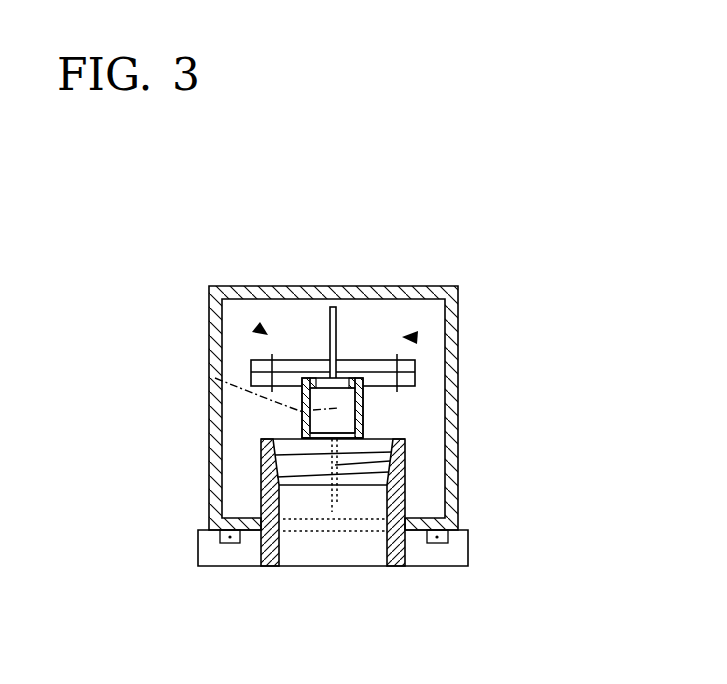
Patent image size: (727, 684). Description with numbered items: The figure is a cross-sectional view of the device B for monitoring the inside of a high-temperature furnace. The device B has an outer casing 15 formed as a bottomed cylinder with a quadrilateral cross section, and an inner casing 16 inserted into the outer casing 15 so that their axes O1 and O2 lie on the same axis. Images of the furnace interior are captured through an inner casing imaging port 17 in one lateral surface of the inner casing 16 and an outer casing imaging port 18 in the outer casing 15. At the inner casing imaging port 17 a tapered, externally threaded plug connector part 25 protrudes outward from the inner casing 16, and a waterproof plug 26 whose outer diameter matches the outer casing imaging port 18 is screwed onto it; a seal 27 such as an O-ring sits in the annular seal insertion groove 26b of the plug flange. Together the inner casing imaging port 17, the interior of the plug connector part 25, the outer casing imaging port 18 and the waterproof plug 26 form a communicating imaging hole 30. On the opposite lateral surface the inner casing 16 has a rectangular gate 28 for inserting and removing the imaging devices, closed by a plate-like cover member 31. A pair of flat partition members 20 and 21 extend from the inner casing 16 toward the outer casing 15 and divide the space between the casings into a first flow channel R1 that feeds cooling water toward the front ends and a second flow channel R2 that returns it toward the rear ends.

The device for monitoring the inside of the high-temperature furnace B is at (594, 157).
The outer casing 15 is at (463, 296).
The inner casing 16 is at (301, 337).
The inner casing imaging port 17 is at (302, 436).
The outer casing imaging port 18 is at (285, 527).
The partition member 20 is at (337, 503).
The partition member 21 is at (329, 311).
The plug connector part 25 is at (405, 455).
The waterproof plug 26 is at (345, 597).
The seal insertion groove 26b is at (283, 597).
The seal 27 is at (228, 544).
The gate 28 is at (341, 382).
The imaging hole 30 is at (376, 575).
The cover member 31 is at (305, 358).
The first flow channel R1 is at (258, 327).
The second flow channel R2 is at (415, 338).
The axis of the outer casing O1 is at (208, 384).
The axis of the inner casing O2 is at (215, 378).